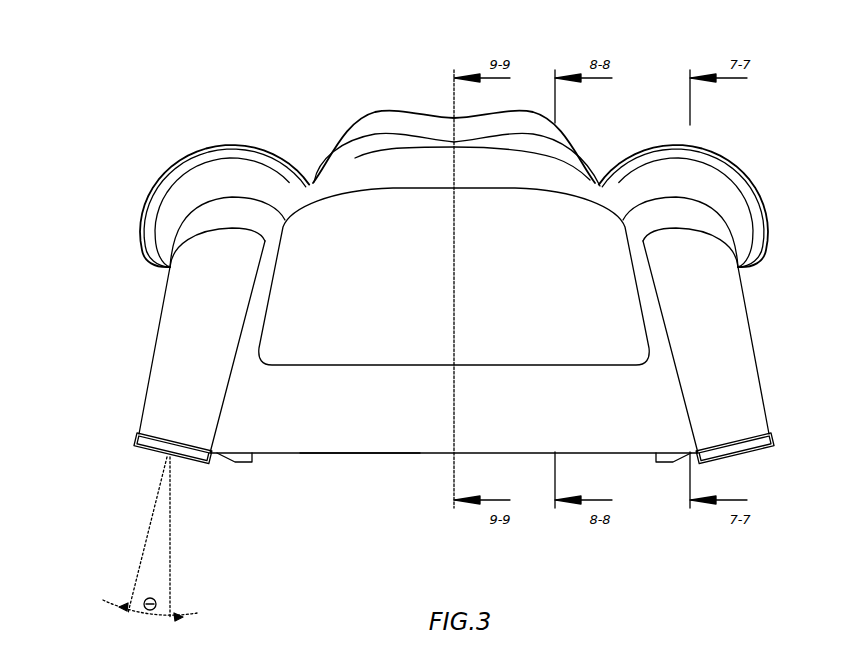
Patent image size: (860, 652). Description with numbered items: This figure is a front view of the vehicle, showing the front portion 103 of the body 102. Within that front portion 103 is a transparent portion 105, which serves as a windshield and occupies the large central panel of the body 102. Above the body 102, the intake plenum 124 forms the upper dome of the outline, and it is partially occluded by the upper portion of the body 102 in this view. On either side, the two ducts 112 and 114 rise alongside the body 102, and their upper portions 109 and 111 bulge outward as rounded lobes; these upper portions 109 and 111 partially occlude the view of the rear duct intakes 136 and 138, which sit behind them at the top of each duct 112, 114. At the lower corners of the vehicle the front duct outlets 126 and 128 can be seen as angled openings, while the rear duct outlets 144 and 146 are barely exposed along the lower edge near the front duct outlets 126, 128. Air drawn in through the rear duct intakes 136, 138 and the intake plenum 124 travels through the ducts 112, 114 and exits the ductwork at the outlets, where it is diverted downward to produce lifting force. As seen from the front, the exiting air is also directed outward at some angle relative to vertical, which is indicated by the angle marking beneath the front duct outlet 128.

The body 102 is at (357, 407).
The front portion 103 is at (411, 441).
The transparent portion 105 is at (482, 266).
The upper portion of duct 109 is at (676, 217).
The upper portion of duct 111 is at (218, 220).
The duct 112 is at (713, 352).
The duct 114 is at (183, 358).
The intake plenum 124 is at (442, 116).
The front duct outlet 126 is at (763, 452).
The front duct outlet 128 is at (137, 452).
The rear duct intake 136 is at (710, 150).
The rear duct intake 138 is at (196, 146).
The rear duct outlet 144 is at (660, 463).
The rear duct outlet 146 is at (232, 462).